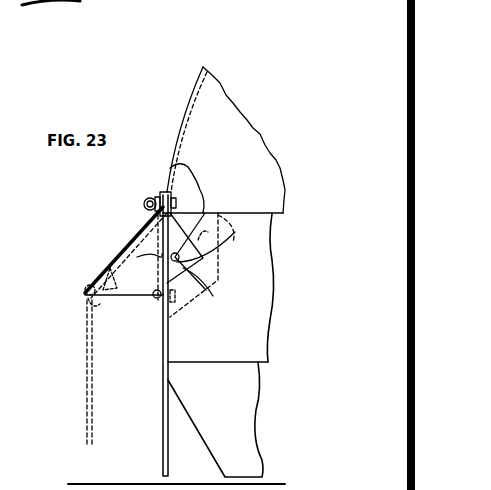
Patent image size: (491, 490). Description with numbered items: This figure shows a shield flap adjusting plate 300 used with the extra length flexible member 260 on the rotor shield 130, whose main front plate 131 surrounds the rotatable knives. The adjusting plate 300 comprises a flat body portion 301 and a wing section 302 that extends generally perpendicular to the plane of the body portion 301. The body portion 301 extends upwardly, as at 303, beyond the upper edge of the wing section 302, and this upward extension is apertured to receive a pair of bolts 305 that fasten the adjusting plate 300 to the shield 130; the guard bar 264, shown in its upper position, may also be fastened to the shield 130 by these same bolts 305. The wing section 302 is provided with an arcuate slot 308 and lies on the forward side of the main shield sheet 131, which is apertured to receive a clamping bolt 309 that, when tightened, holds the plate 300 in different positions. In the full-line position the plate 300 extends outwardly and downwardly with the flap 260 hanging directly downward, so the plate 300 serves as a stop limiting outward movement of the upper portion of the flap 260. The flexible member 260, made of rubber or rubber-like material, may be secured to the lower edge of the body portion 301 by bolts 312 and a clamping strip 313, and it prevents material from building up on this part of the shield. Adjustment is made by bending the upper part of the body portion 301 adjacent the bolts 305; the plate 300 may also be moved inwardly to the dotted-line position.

The shield structure 130 is at (196, 74).
The front plate 131 is at (258, 330).
The extra length flexible member 260 is at (160, 398).
The guard bar 264 is at (154, 199).
The shield flap adjusting plate 300 is at (112, 252).
The flat body portion 301 is at (137, 238).
The wing section 302 is at (214, 265).
The upward extension of body portion 303 is at (160, 194).
The bolts 305 is at (144, 203).
The arcuate slot 308 is at (205, 214).
The clamping bolt 309 is at (189, 289).
The bolts 312 is at (155, 297).
The clamping strip 313 is at (84, 302).